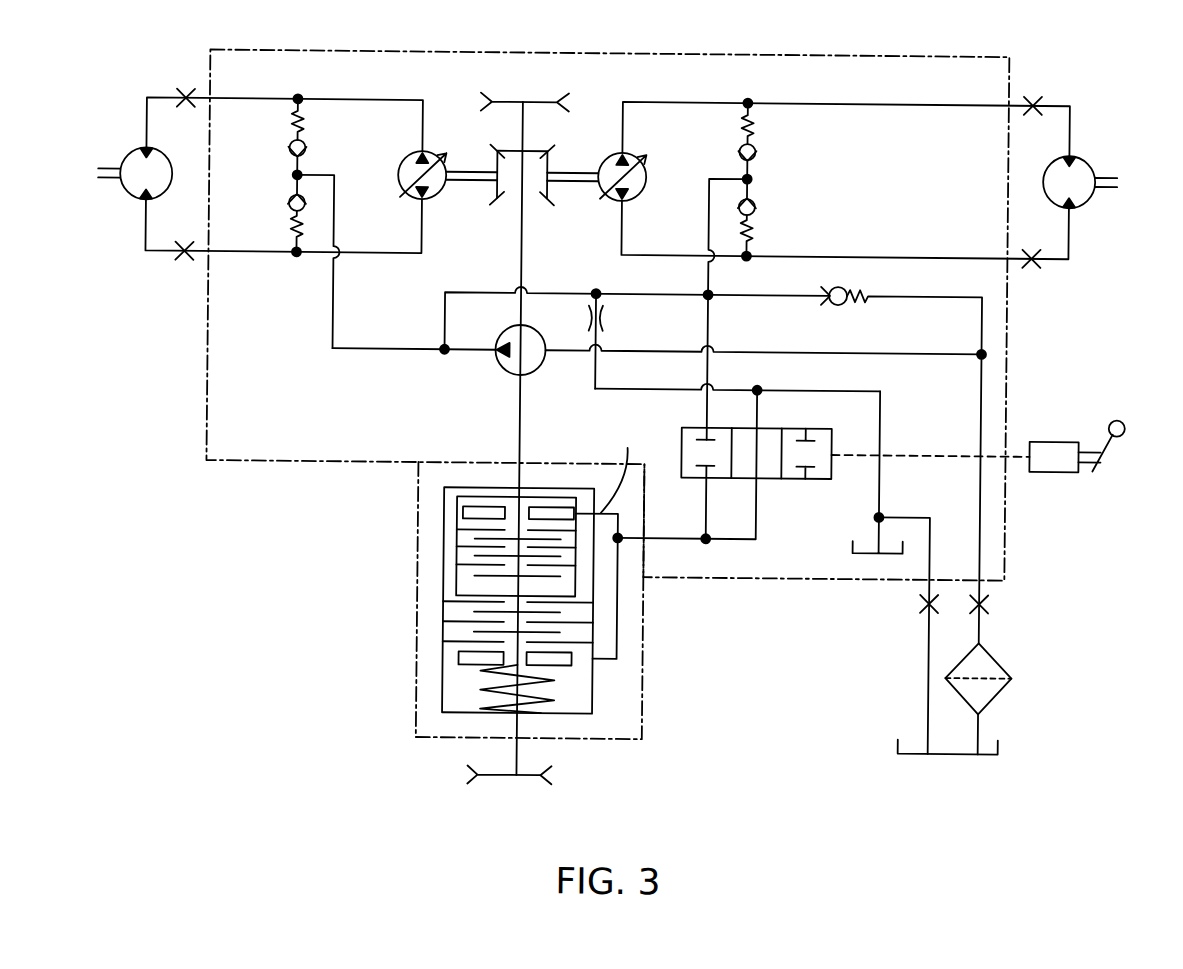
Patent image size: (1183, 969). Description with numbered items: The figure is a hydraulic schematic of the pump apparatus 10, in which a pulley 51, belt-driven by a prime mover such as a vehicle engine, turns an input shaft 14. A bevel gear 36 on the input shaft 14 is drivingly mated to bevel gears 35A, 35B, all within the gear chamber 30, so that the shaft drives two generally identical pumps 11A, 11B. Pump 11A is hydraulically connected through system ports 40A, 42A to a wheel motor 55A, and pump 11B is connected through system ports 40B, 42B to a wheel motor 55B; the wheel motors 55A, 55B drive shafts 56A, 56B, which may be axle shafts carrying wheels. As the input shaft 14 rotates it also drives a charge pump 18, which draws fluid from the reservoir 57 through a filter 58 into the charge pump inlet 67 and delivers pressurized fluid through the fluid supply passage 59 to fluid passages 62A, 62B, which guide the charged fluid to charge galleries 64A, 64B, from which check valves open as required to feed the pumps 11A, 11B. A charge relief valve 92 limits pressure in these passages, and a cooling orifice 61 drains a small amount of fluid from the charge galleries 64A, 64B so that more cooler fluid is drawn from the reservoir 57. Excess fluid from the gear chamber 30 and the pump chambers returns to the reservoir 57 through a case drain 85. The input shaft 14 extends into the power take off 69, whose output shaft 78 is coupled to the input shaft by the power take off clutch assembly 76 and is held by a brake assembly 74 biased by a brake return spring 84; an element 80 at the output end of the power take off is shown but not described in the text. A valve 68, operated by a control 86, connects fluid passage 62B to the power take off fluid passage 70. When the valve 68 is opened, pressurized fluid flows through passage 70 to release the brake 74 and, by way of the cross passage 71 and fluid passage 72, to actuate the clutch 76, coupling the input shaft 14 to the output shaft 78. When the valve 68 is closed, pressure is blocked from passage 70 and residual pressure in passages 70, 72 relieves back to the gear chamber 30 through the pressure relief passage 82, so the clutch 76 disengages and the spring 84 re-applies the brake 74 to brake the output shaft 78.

The pump apparatus 10 is at (448, 52).
The pump 11A is at (402, 155).
The pump 11B is at (640, 152).
The input shaft 14 is at (525, 258).
The charge pump 18 is at (504, 366).
The gear chamber 30 is at (868, 550).
The bevel gear 35A is at (495, 204).
The bevel gear 35B is at (552, 204).
The bevel gear 36 is at (532, 150).
The system port 40A is at (182, 259).
The system port 40B is at (1034, 259).
The system port 42A is at (182, 96).
The system port 42B is at (1034, 96).
The pulley 51 is at (507, 97).
The wheel motor 55A is at (128, 199).
The wheel motor 55B is at (1088, 199).
The shaft 56A is at (108, 170).
The shaft 56B is at (1110, 170).
The reservoir 57 is at (955, 752).
The filter 58 is at (996, 697).
The fluid supply passage 59 is at (470, 352).
The orifice 61 is at (602, 315).
The fluid passage 62A is at (378, 352).
The fluid passage 62B is at (444, 319).
The charge gallery 64A is at (320, 175).
The charge gallery 64B is at (716, 180).
The charge pump inlet 67 is at (988, 606).
The valve 68 is at (818, 478).
The power take off 69 is at (411, 662).
The power take off fluid passage 70 is at (622, 624).
The cross passage 71 is at (621, 524).
The fluid passage 72 is at (622, 469).
The brake assembly 74 is at (446, 630).
The power take off clutch assembly 76 is at (458, 537).
The output shaft 78 is at (516, 755).
The output shaft 80 is at (546, 782).
The pressure relief passage 82 is at (760, 400).
The brake return spring 84 is at (540, 689).
The case drain 85 is at (926, 606).
The control 86 is at (1055, 469).
The charge relief valve 92 is at (828, 300).